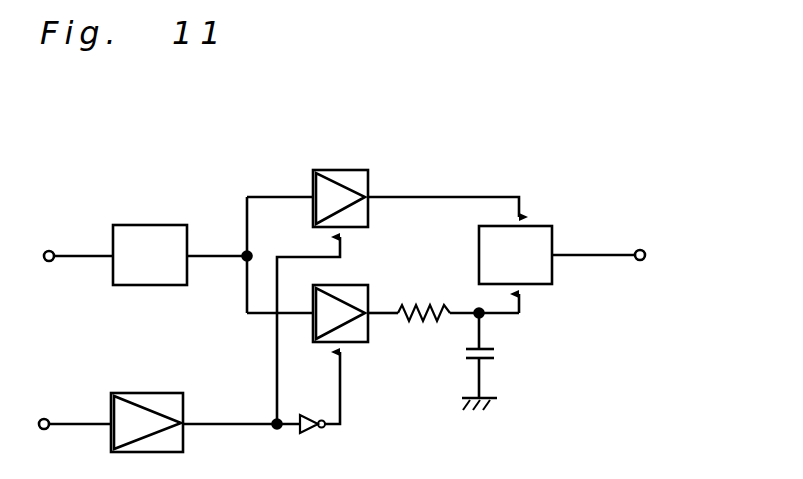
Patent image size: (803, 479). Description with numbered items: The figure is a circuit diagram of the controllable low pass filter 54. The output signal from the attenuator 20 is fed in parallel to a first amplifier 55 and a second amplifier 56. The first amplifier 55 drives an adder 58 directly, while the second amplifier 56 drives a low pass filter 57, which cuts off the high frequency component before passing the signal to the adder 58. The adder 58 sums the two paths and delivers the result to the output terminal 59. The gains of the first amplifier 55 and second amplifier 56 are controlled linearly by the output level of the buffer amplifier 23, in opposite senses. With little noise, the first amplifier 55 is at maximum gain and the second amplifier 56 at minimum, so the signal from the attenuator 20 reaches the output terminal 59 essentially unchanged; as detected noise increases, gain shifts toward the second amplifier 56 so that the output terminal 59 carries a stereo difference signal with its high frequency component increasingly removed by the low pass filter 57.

The attenuator 20 is at (160, 225).
The buffer amplifier 23 is at (150, 393).
The controllable low pass filter 54 is at (442, 163).
The first amplifier 55 is at (336, 170).
The second amplifier 56 is at (343, 285).
The low pass filter 57 is at (432, 383).
The adder 58 is at (548, 226).
The output terminal 59 is at (645, 250).